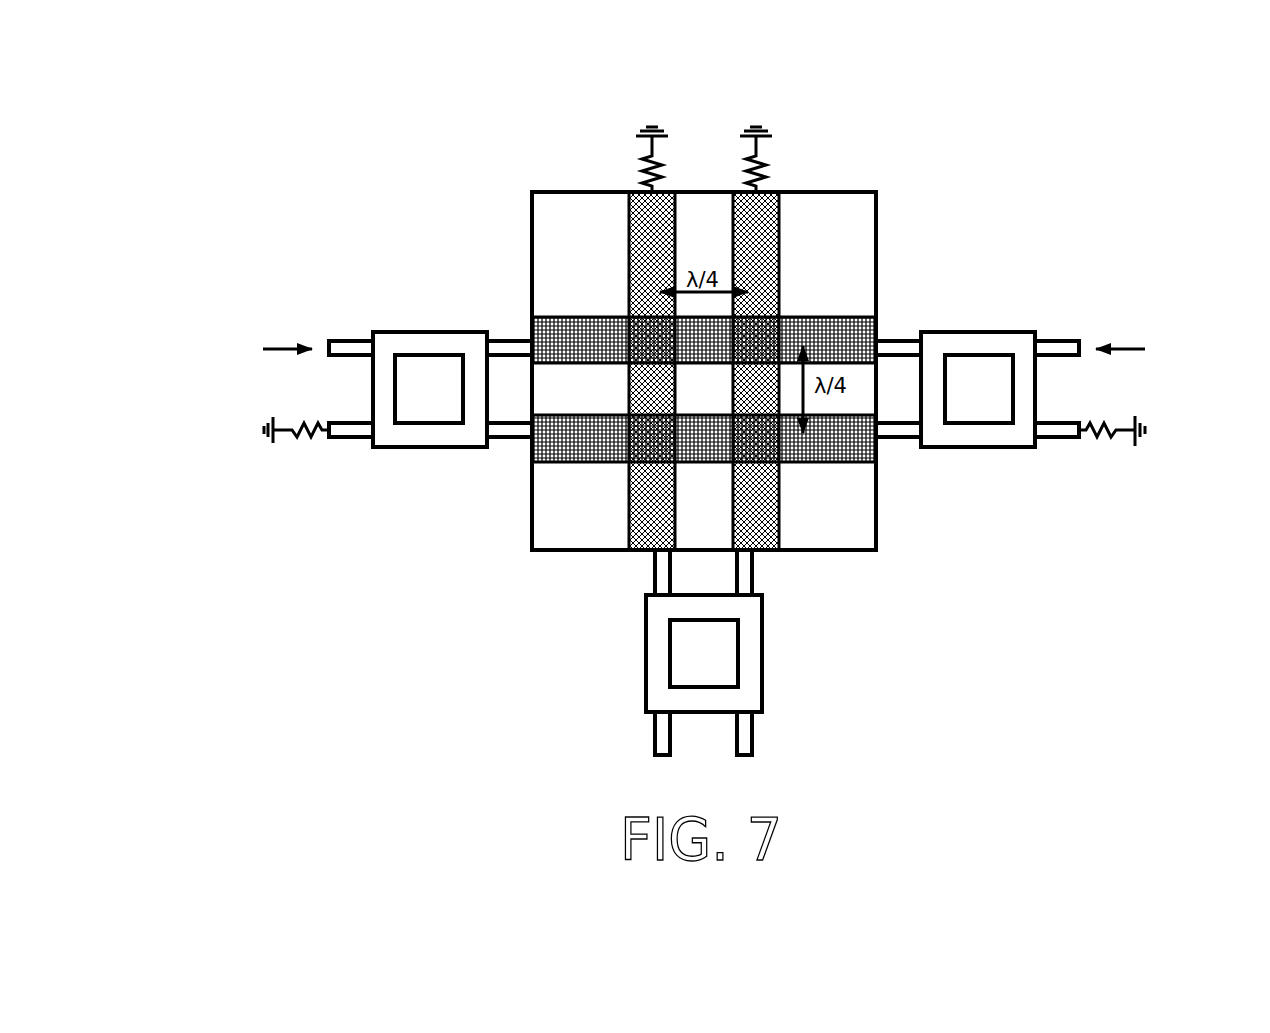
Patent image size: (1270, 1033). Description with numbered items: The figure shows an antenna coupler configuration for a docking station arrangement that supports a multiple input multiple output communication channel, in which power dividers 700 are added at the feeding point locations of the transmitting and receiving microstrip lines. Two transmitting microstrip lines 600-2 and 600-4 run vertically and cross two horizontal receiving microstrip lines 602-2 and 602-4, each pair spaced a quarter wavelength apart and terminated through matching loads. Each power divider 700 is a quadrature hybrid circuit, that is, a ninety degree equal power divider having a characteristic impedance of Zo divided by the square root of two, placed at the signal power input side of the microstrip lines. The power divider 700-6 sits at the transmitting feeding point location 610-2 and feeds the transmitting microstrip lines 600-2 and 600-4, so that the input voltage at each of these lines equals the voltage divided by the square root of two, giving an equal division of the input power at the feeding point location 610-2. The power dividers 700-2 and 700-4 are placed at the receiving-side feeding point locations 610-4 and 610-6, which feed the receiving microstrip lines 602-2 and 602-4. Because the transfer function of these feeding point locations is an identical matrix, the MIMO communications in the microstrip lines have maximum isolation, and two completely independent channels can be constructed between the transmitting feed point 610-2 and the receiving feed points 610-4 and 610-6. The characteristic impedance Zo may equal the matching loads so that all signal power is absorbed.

The power dividers 700 is at (246, 138).
The transmitting microstrip line 600-2 is at (631, 188).
The transmitting microstrip line 600-4 is at (777, 188).
The receiving microstrip line 602-2 is at (842, 312).
The receiving microstrip line 602-4 is at (852, 468).
The power divider 700-2 is at (437, 323).
The power divider 700-4 is at (987, 323).
The power divider 700-6 is at (770, 680).
The feeding point location 610-2 is at (731, 772).
The feeding point location 610-4 is at (294, 352).
The feeding point location 610-6 is at (1118, 367).